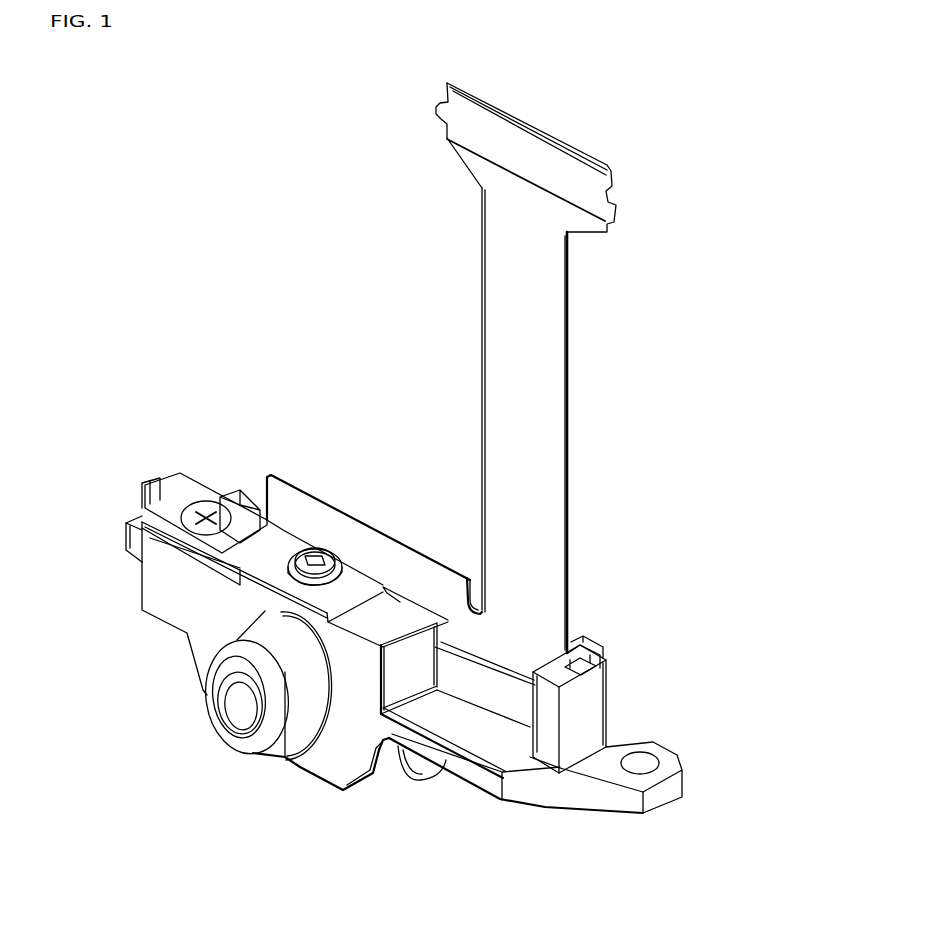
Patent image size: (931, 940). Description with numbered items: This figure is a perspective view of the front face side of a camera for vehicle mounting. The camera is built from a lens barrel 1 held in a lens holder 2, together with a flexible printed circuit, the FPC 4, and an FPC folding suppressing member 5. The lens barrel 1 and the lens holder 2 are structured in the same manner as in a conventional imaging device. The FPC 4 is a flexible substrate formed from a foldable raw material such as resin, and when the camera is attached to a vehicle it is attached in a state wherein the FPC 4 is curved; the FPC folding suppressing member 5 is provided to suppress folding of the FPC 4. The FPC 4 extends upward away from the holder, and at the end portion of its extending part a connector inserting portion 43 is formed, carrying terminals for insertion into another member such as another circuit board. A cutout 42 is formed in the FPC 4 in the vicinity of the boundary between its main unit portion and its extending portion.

The lens barrel 1 is at (300, 712).
The lens holder 2 is at (507, 745).
The FPC 4 is at (507, 327).
The FPC folding suppressing member 5 is at (472, 570).
The cutout 42 is at (480, 613).
The connector inserting portion 43 is at (535, 157).